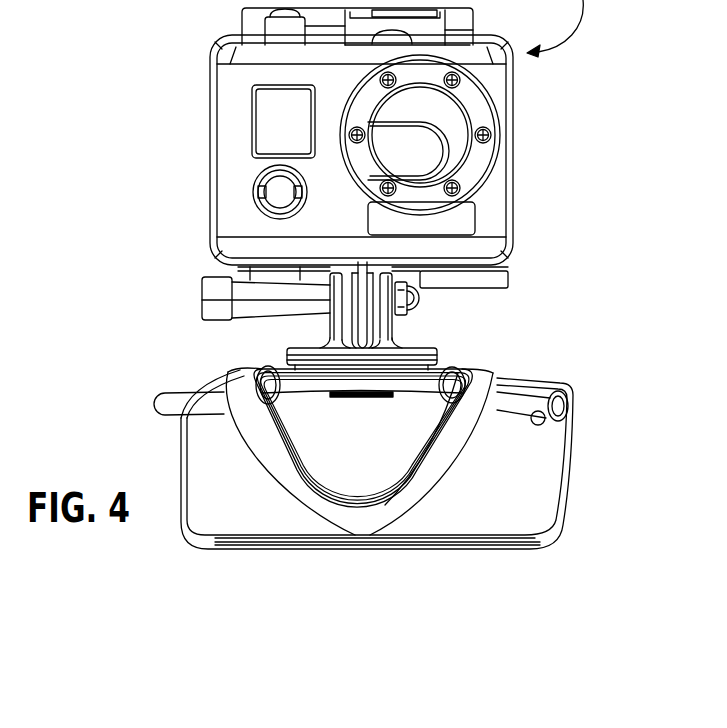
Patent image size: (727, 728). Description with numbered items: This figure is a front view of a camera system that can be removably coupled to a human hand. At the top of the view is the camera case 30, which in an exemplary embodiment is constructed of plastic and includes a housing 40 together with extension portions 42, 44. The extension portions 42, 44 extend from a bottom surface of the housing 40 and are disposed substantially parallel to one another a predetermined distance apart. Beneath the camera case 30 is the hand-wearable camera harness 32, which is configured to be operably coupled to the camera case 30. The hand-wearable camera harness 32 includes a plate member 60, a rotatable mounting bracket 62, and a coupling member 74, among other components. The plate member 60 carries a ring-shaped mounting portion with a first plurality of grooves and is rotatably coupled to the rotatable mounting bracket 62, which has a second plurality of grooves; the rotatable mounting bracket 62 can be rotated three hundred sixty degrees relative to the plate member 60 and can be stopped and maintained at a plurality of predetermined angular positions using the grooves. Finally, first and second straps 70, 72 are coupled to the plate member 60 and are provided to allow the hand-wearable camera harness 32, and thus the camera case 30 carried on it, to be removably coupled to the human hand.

The camera case 30 is at (515, 207).
The housing 40 is at (508, 94).
The coupling member 74 is at (212, 290).
The extension portion 42 is at (346, 310).
The extension portion 44 is at (396, 300).
The rotatable mounting bracket 62 is at (440, 352).
The hand-wearable camera harness 32 is at (510, 408).
The strap 72 is at (505, 549).
The plate member 60 is at (300, 384).
The strap 70 is at (360, 518).